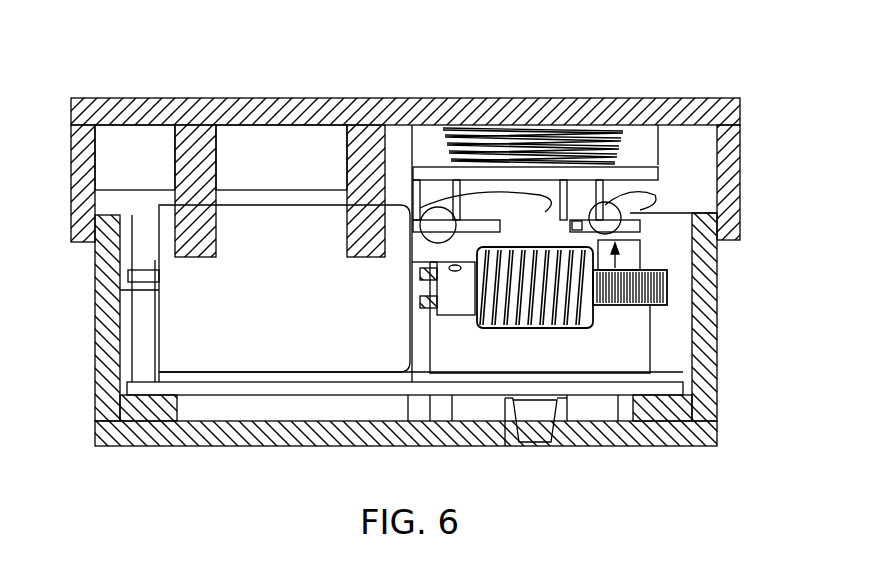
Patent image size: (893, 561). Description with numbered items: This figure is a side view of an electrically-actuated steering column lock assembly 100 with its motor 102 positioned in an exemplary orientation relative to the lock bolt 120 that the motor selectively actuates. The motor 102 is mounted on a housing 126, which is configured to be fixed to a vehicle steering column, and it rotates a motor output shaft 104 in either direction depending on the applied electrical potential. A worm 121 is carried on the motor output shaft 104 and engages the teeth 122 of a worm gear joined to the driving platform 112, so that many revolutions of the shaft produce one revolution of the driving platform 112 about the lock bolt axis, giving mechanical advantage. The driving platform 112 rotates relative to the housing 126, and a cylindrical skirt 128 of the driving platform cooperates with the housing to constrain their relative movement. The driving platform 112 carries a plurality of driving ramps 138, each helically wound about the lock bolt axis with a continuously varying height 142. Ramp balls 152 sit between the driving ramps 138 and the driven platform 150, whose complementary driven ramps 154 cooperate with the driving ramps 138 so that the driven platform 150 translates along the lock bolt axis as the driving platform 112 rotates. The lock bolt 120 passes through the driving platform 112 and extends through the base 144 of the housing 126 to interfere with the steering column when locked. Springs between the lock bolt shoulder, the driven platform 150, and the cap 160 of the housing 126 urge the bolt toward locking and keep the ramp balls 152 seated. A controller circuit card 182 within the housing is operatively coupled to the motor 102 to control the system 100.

The electrically-actuated steering column lock assembly 100 is at (624, 52).
The motor 102 is at (300, 294).
The motor output shaft 104 is at (430, 278).
The driving platform 112 is at (668, 268).
The lock bolt 120 is at (522, 410).
The worm 121 is at (530, 330).
The teeth 122 is at (665, 292).
The housing 126 is at (105, 372).
The cylindrical skirt 128 is at (637, 348).
The driving ramps 138 is at (445, 250).
The height 142 is at (625, 250).
The base 144 is at (462, 430).
The driven platform 150 is at (625, 177).
The ramp balls 152 is at (620, 217).
The driven ramps 154 is at (660, 172).
The cap 160 is at (568, 106).
The controller circuit card 182 is at (140, 390).